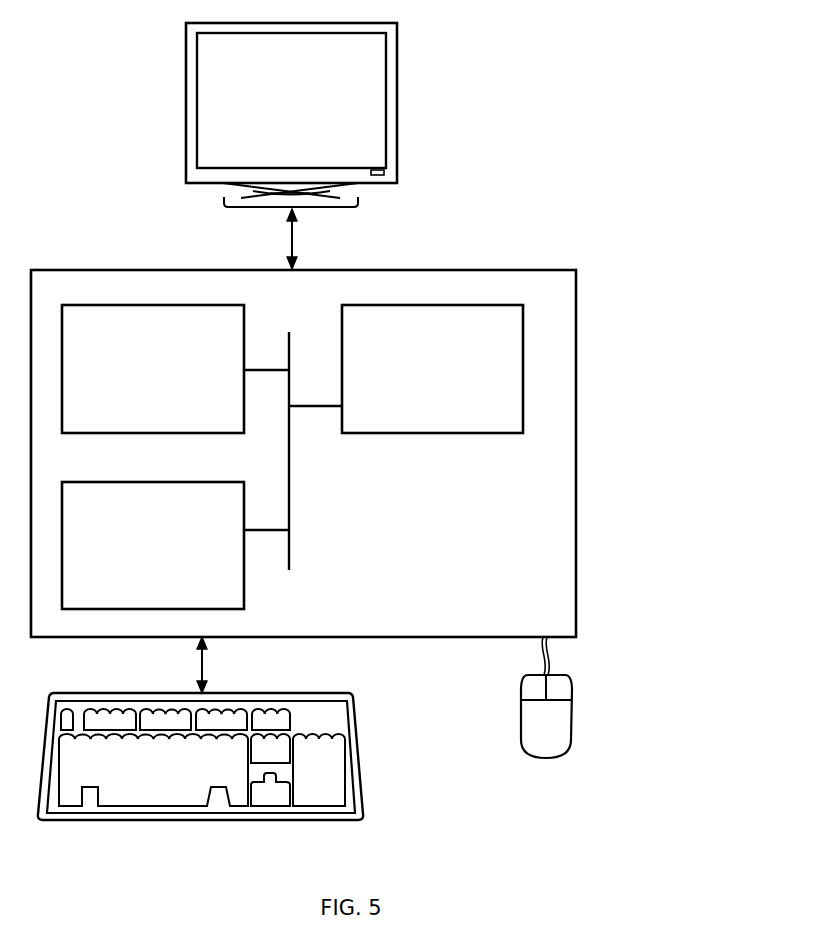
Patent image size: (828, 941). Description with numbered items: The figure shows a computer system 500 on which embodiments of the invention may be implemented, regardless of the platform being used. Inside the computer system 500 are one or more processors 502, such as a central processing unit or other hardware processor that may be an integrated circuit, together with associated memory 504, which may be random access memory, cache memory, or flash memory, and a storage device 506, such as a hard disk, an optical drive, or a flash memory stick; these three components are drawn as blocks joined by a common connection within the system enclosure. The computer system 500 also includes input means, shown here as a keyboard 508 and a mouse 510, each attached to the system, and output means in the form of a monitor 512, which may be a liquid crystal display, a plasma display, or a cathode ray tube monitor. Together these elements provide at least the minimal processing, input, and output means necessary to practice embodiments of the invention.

The computer system 500 is at (617, 280).
The processor 502 is at (432, 369).
The memory 504 is at (153, 369).
The storage device 506 is at (153, 545).
The keyboard 508 is at (200, 728).
The mouse 510 is at (571, 760).
The monitor 512 is at (291, 146).